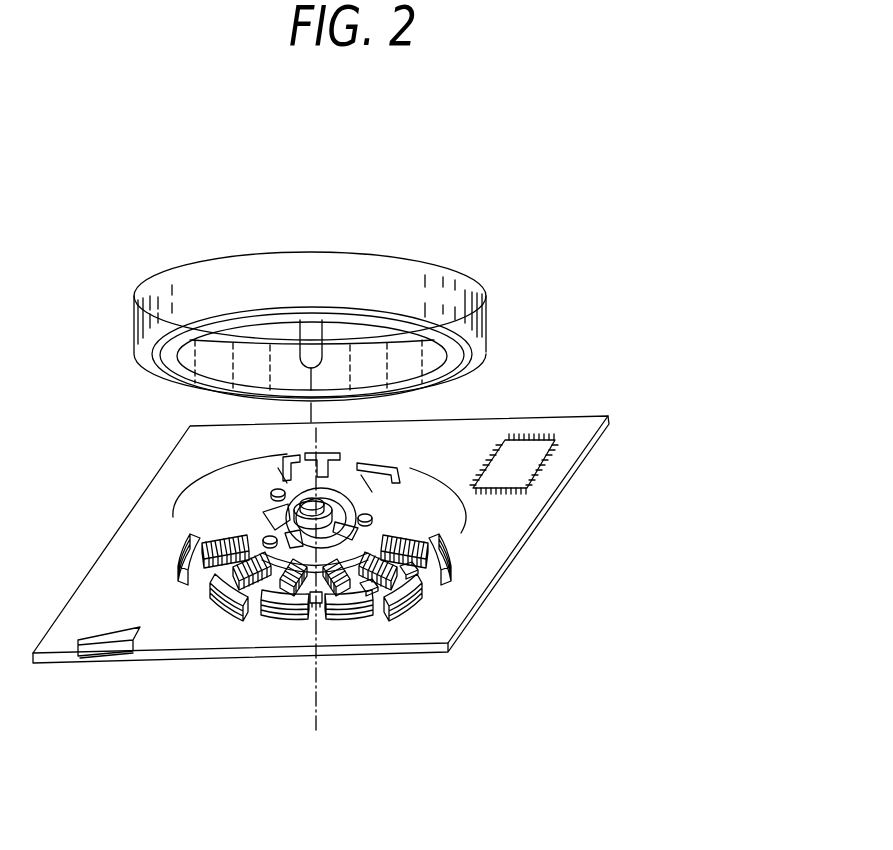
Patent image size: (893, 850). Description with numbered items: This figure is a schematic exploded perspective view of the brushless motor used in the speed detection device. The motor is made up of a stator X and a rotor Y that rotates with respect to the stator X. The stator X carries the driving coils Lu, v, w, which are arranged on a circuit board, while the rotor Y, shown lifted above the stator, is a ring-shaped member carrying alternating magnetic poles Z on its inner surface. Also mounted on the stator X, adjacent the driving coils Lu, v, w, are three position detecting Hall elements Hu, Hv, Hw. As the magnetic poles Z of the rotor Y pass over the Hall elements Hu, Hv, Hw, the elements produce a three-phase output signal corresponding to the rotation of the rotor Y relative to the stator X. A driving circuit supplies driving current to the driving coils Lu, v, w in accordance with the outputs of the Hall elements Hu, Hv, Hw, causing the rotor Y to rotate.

The rotor Y is at (440, 266).
The magnetic poles Z is at (417, 367).
The stator X is at (429, 591).
The driving coils Lu, v, w is at (433, 547).
The Hall element Hu is at (420, 565).
The Hall element Hv is at (369, 593).
The Hall element Hw is at (316, 603).